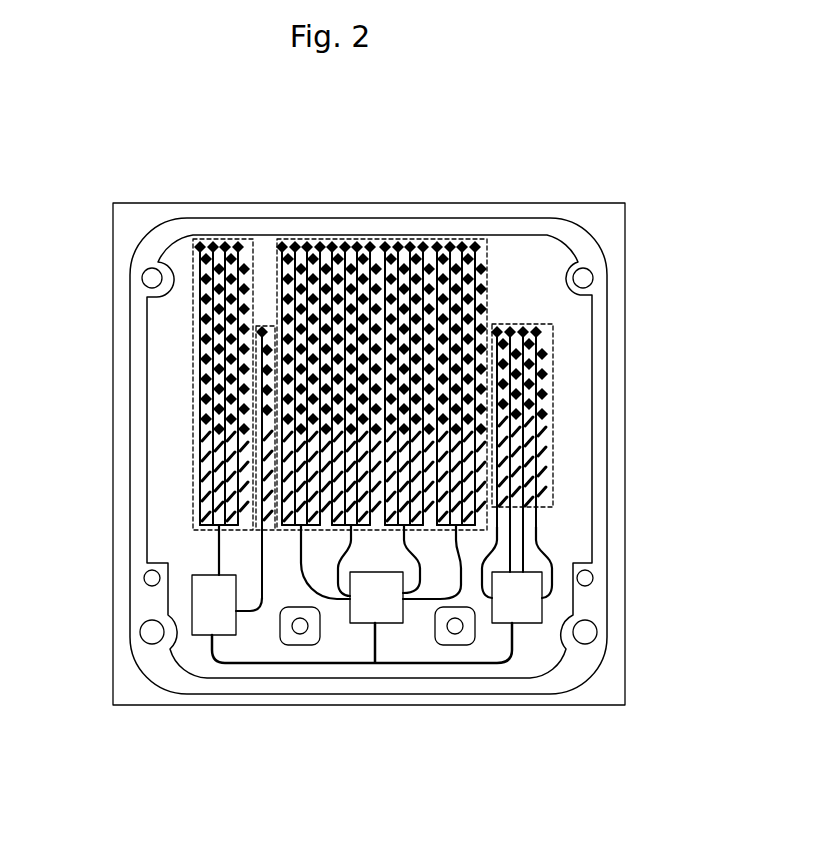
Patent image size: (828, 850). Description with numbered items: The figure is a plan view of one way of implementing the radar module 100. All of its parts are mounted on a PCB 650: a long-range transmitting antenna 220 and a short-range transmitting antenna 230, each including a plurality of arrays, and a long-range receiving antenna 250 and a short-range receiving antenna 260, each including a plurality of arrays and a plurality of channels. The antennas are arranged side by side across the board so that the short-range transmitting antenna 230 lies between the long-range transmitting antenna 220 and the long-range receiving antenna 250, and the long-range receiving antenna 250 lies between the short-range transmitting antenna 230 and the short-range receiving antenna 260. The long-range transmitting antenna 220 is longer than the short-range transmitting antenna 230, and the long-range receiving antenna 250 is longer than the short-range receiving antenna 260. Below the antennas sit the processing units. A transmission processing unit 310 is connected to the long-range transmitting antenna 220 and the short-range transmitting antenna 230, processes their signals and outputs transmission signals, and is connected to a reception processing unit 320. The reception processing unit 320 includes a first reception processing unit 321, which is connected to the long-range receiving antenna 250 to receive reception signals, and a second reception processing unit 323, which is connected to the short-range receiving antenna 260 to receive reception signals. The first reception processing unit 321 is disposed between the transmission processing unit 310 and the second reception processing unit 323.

The radar module 100 is at (134, 121).
The long-range transmitting antenna 220 is at (193, 387).
The short-range transmitting antenna 230 is at (265, 325).
The long-range receiving antenna 250 is at (376, 238).
The short-range receiving antenna 260 is at (519, 323).
The transmission processing unit 310 is at (208, 641).
The reception processing unit 320 is at (382, 692).
The first reception processing unit 321 is at (372, 630).
The second reception processing unit 323 is at (522, 669).
The PCB 650 is at (587, 352).